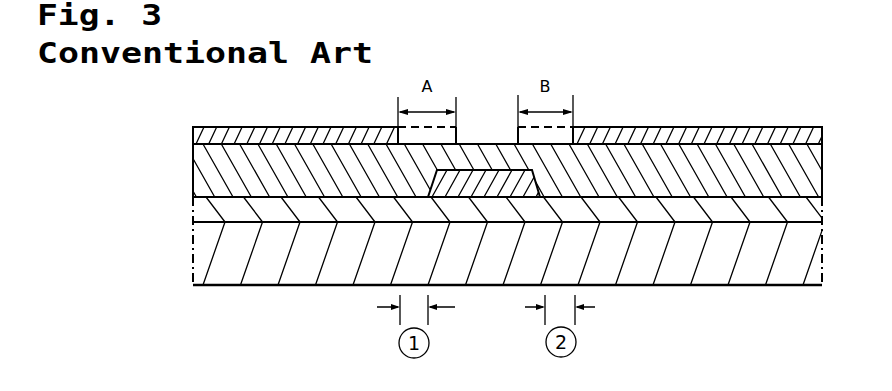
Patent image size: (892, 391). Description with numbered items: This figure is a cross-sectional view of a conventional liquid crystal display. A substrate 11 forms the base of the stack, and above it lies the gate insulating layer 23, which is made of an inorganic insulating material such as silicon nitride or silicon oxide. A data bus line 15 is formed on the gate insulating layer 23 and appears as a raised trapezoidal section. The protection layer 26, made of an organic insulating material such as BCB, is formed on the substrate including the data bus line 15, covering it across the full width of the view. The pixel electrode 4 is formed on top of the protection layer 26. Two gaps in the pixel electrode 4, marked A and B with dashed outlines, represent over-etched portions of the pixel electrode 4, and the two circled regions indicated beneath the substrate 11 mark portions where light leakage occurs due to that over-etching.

The pixel electrode 4 is at (712, 137).
The substrate 11 is at (715, 266).
The data bus line 15 is at (492, 186).
The gate insulating layer 23 is at (773, 207).
The protection layer 26 is at (203, 175).